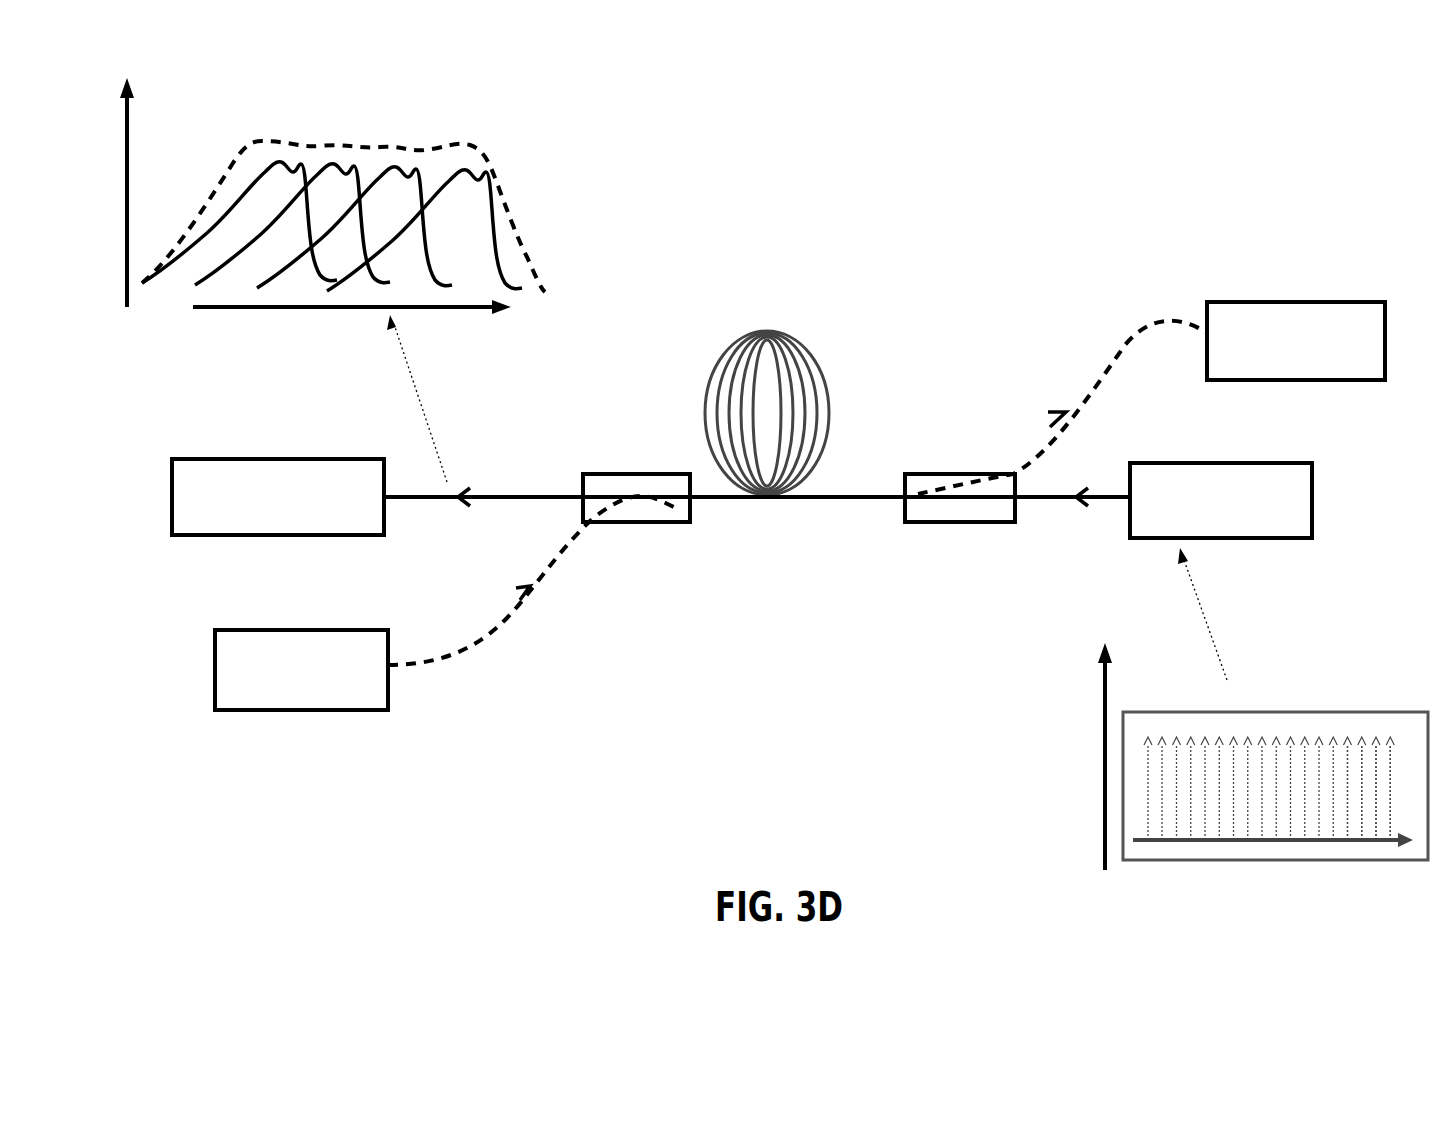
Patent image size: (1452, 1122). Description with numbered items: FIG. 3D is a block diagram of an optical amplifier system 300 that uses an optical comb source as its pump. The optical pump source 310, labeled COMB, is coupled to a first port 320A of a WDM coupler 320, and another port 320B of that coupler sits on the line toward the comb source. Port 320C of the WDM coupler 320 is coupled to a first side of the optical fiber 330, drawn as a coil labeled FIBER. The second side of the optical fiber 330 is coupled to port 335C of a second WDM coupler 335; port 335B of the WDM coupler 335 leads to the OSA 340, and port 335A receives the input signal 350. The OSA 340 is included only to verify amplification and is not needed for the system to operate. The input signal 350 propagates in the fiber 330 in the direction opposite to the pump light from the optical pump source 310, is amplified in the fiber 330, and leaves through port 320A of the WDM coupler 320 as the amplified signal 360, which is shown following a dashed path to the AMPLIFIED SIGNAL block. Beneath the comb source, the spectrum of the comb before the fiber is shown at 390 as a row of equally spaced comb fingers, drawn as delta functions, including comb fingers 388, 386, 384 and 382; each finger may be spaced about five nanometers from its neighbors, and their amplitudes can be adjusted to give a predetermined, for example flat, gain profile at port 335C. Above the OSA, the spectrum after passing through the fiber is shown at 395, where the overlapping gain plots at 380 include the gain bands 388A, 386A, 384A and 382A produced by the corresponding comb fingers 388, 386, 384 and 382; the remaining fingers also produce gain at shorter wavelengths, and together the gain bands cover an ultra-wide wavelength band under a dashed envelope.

The optical comb based amplifier characterization system 300 is at (757, 264).
The spectral characteristics after passing through fiber 395 is at (300, 257).
The gain plot 388A is at (280, 158).
The gain plot 386A is at (334, 160).
The gain plot 384A is at (396, 165).
The gain plot 382A is at (466, 168).
The overlapping gain plots 380 is at (503, 196).
The OSA 340 is at (305, 457).
The WDM coupler 335 is at (622, 474).
The port 335A is at (583, 530).
The port 335B is at (569, 494).
The port 335C is at (717, 500).
The input signal 350 is at (286, 704).
The optical fiber 330 is at (817, 353).
The WDM coupler 320 is at (933, 472).
The first port 320A is at (997, 472).
The second WDM coupler comb port 320B is at (1028, 493).
The port 320C is at (900, 510).
The optical pump source 310 is at (1150, 461).
The amplified signal 360 is at (1322, 302).
The comb source spectral characteristics 390 is at (1132, 711).
The comb finger 388 is at (1347, 740).
The comb finger 386 is at (1361, 740).
The comb finger 384 is at (1376, 740).
The comb finger 382 is at (1390, 740).